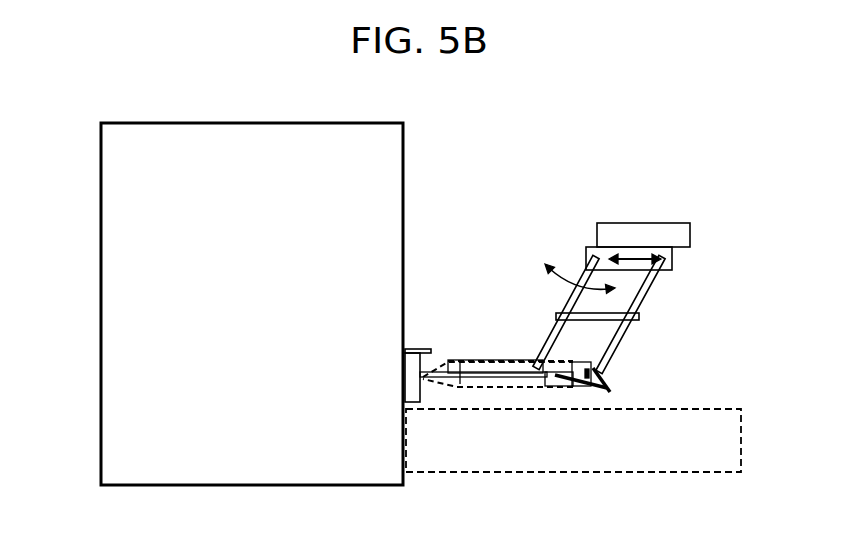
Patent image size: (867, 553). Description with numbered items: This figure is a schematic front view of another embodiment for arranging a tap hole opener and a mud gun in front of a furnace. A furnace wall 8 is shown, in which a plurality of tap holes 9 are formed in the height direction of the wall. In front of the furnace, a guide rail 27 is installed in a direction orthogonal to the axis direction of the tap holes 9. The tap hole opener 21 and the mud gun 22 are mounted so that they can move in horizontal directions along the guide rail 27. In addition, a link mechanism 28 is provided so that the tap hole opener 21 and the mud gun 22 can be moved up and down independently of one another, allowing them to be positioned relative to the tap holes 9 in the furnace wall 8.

The furnace wall 8 is at (101, 238).
The tap holes 9 is at (420, 388).
The tap hole opener 21 is at (461, 367).
The mud gun 22 is at (493, 362).
The guide rail 27 is at (690, 233).
The link mechanism 28 is at (655, 285).